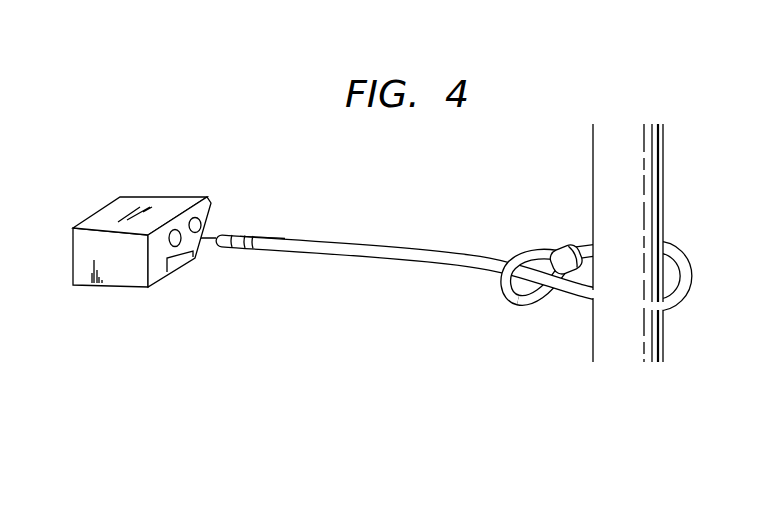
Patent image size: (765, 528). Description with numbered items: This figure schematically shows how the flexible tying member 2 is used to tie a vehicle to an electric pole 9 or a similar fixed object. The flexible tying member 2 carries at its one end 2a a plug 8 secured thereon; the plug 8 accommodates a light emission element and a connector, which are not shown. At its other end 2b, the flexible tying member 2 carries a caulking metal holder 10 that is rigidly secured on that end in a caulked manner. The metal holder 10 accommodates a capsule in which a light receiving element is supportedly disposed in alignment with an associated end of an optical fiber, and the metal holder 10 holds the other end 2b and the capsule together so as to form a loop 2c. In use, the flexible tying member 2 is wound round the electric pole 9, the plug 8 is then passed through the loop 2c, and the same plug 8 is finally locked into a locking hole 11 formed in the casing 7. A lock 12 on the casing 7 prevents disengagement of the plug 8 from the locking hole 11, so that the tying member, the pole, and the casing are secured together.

The flexible tying member 2 is at (362, 257).
The one end 2a is at (264, 236).
The other end 2b is at (550, 282).
The loop 2c is at (530, 253).
The casing 7 is at (117, 275).
The plug 8 is at (219, 250).
The electric pole 9 is at (655, 185).
The caulking metal holder 10 is at (566, 247).
The locking hole 11 is at (177, 229).
The lock 12 is at (201, 220).